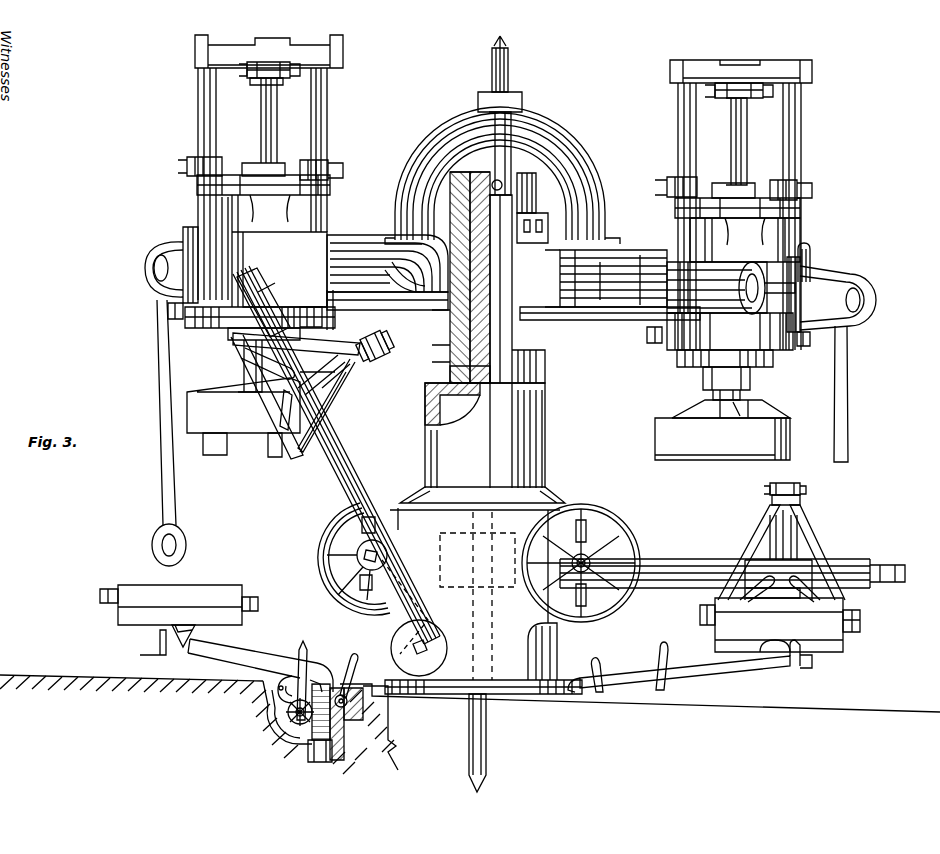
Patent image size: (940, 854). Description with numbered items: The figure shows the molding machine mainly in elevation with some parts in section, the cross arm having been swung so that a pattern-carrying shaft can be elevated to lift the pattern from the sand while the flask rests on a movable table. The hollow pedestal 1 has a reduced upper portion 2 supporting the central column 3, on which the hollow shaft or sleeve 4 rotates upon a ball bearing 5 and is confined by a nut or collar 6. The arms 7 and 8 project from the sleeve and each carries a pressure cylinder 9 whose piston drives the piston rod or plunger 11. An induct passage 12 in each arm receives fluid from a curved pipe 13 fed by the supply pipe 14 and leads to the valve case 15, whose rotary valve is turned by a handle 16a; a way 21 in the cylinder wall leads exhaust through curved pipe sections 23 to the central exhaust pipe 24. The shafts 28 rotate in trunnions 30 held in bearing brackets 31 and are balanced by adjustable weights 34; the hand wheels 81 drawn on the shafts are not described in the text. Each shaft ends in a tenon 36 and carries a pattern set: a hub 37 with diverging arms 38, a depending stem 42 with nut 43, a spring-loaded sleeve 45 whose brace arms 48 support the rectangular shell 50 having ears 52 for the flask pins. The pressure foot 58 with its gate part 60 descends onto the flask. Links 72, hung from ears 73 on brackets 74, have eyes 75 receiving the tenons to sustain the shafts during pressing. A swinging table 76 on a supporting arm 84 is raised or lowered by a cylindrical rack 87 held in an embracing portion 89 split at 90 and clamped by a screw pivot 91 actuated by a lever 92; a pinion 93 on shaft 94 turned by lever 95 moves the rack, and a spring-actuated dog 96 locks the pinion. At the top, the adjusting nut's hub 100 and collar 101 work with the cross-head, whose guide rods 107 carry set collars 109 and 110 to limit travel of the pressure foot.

The hollow pedestal 1 is at (535, 504).
The upper portion of pedestal 2 is at (546, 422).
The column 3 is at (450, 318).
The hollow shaft or sleeve 4 is at (450, 348).
The ball bearing 5 is at (450, 368).
The nut or collar 6 is at (538, 192).
The arm 7 is at (606, 316).
The arm 8 is at (385, 303).
The pressure cylinder 9 is at (268, 200).
The piston rod or plunger 11 is at (256, 104).
The induct passage 12 is at (355, 240).
The curved pipe 13 is at (432, 128).
The supply pipe 14 is at (509, 74).
The valve case 15 is at (745, 252).
The handle 16a is at (808, 243).
The way 21 is at (440, 276).
The curved pipe sections 23 is at (452, 194).
The central exhaust pipe 24 is at (489, 160).
The shaft 28 is at (680, 558).
The trunnion 30 is at (388, 556).
The bearing bracket 31 is at (380, 525).
The adjustable weight 34 is at (430, 632).
The tenon 36 is at (273, 273).
The hub 37 is at (316, 374).
The diverging arms 38 is at (296, 376).
The stem 42 is at (382, 340).
The nut 43 is at (382, 368).
The sleeve 45 is at (352, 376).
The brace arms 48 is at (302, 344).
The rectangular shell 50 is at (262, 408).
The ears 52 is at (698, 612).
The pressure foot 58 is at (190, 435).
The gate part 60 is at (215, 460).
The link 72 is at (160, 396).
The ear 73 is at (150, 256).
The bracket 74 is at (183, 232).
The eye 75 is at (180, 543).
The swinging table 76 is at (843, 644).
The handwheel 81 is at (368, 503).
The supporting arm 84 is at (220, 662).
The cylindrical rack 87 is at (325, 762).
The embracing portion of housing 89 is at (346, 750).
The split 90 is at (344, 718).
The pivot 91 is at (348, 694).
The lever 92 is at (350, 656).
The pinion 93 is at (272, 732).
The shaft 94 is at (286, 752).
The lever 95 is at (298, 644).
The spring-actuated dog 96 is at (278, 686).
The hub 100 is at (252, 78).
The collar 101 is at (288, 78).
The guide rods 107 is at (198, 100).
The set collars 109 is at (168, 310).
The set collars 110 is at (190, 154).